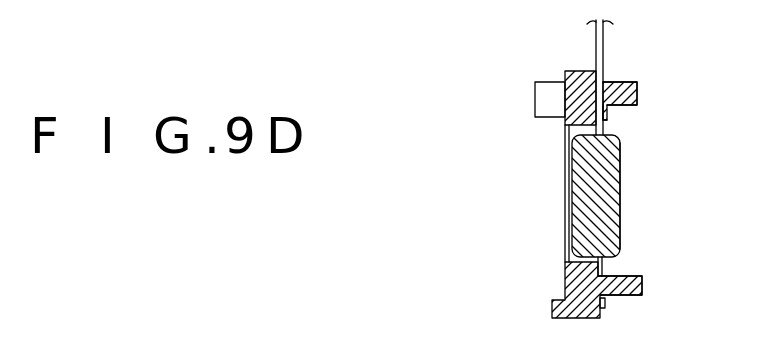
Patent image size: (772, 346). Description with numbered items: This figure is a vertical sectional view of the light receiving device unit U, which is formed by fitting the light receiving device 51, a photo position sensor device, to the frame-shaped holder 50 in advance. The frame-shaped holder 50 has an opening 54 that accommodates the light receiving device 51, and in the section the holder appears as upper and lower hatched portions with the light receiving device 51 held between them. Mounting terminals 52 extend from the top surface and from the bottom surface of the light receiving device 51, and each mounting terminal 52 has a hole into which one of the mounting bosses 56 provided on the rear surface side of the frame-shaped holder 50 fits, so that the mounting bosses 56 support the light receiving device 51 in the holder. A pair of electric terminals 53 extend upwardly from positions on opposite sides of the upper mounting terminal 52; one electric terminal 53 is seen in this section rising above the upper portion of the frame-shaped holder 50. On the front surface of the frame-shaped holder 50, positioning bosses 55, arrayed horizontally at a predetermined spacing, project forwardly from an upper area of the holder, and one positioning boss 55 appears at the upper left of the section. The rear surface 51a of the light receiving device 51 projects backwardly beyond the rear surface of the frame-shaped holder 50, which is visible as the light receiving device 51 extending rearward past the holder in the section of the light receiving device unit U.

The frame-shaped holder 50 is at (578, 71).
The light receiving device 51 is at (613, 175).
The rear surface of the light receiving device 51a is at (622, 207).
The mounting terminal 52 is at (607, 120).
The electric terminal 53 is at (603, 42).
The opening 54 is at (572, 137).
The positioning boss 55 is at (535, 100).
The mounting boss 56 is at (637, 93).
The light receiving device unit U is at (653, 245).